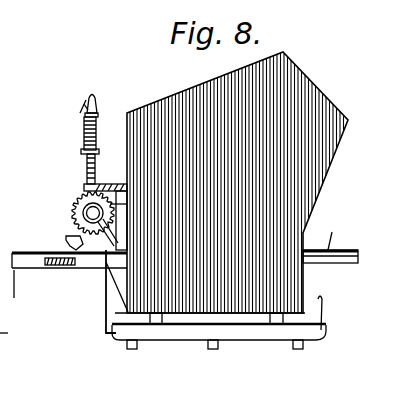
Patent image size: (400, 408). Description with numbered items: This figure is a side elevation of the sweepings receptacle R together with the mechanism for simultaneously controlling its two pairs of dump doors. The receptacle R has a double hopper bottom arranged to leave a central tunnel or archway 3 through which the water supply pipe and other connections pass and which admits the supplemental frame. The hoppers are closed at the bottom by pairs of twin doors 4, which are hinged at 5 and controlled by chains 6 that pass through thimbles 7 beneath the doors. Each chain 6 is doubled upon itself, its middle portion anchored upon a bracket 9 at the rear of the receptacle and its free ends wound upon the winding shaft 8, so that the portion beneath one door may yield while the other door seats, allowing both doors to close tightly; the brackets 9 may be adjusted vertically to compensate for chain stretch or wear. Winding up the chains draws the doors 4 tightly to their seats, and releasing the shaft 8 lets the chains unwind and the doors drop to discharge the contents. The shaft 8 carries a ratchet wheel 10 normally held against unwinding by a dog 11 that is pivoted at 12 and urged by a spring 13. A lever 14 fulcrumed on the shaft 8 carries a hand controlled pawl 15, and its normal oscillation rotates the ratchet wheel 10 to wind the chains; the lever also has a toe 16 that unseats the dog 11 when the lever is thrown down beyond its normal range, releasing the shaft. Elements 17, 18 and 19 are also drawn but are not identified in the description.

The sweepings receptacle R is at (237, 182).
The lever 14 is at (96, 118).
The toe 16 is at (86, 178).
The hand controlled pawl 15 is at (97, 183).
The ratchet wheel 10 is at (78, 200).
The winding shaft 8 is at (84, 214).
The dog 11 is at (66, 241).
The bracket 19 is at (125, 210).
The spring 13 is at (22, 268).
The central tunnel or archway 3 is at (178, 271).
The pivot 12 is at (60, 266).
The chains 6 is at (108, 303).
The post 18 is at (106, 318).
The hinges 5 is at (4, 343).
The right rail 17 is at (306, 246).
The bracket 9 is at (312, 297).
The twin doors 4 is at (255, 341).
The thimbles 7 is at (304, 357).